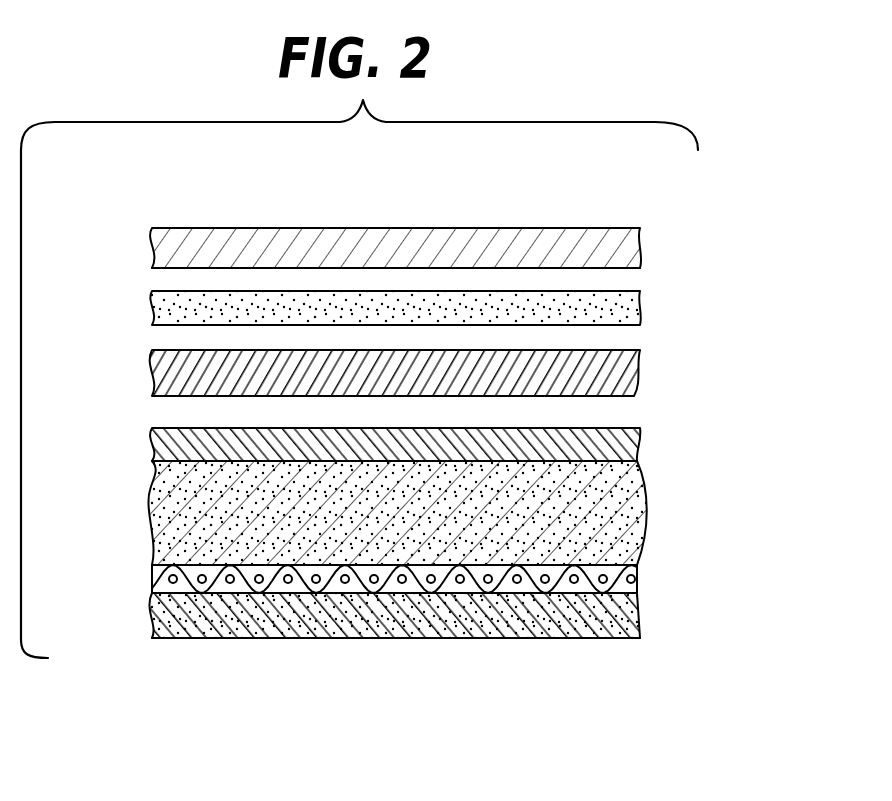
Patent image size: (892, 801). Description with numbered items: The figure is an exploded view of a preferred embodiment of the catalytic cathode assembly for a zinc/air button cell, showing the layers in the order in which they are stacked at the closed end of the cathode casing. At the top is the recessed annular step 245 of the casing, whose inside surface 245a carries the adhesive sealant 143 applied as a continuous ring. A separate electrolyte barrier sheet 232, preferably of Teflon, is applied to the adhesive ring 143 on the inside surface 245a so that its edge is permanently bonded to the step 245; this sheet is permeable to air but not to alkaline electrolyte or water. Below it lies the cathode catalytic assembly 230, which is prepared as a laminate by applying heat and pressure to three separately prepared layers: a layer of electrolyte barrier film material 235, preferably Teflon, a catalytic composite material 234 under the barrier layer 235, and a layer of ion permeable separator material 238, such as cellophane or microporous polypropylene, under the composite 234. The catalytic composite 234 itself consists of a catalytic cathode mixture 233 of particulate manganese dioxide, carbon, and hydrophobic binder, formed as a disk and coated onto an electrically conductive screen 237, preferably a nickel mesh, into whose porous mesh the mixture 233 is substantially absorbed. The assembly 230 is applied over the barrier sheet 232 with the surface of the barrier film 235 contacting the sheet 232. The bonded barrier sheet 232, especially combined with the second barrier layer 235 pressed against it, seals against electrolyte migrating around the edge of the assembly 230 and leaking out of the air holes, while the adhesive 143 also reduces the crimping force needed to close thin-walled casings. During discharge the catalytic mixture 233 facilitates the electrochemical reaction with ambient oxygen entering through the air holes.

The recessed annular step 245 is at (612, 248).
The inside surface of recessed annular step 245a is at (190, 268).
The adhesive sealant 143 is at (640, 302).
The electrolyte barrier sheet 232 is at (630, 368).
The cathode catalytic assembly 230 is at (405, 562).
The electrolyte barrier film material 235 is at (636, 438).
The catalytic cathode mixture 233 is at (625, 490).
The catalytic composite material 234 is at (652, 533).
The screen 237 is at (628, 597).
The ion permeable separator material 238 is at (590, 640).